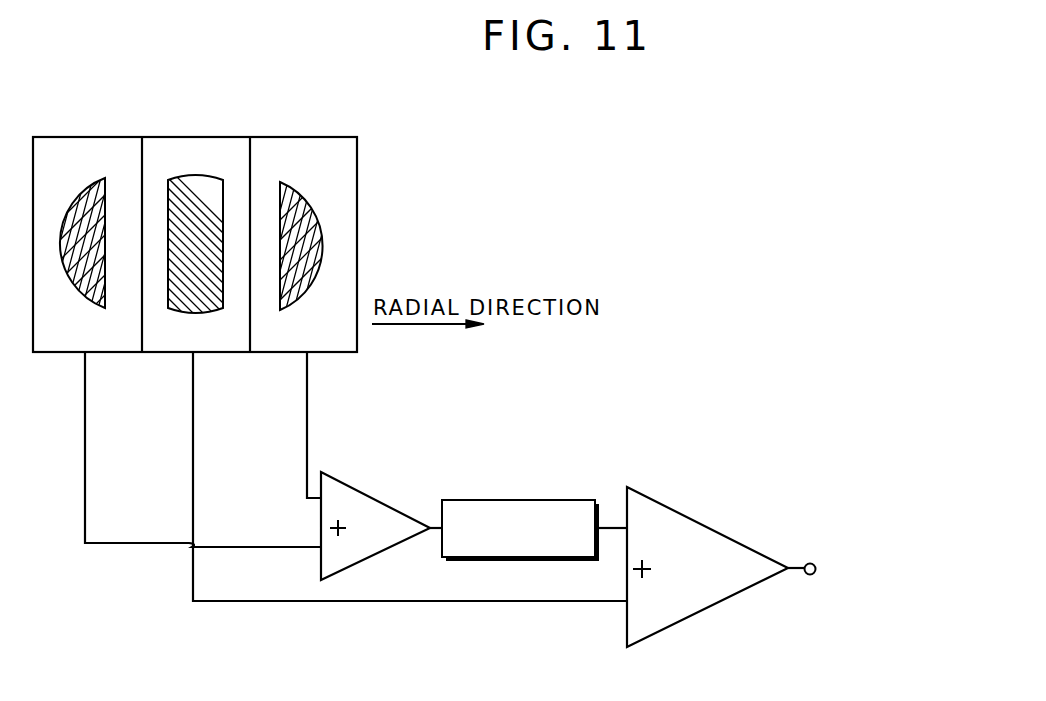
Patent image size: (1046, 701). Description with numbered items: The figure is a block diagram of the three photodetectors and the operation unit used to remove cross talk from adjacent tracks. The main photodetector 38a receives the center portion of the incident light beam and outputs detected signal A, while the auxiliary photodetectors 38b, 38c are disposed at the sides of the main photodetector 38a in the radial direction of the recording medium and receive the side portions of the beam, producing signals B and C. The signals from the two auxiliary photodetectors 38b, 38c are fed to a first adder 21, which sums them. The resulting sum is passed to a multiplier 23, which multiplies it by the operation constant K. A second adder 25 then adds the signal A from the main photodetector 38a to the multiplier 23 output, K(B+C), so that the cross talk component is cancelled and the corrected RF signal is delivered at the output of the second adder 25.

The auxiliary photodetector 38b is at (102, 135).
The main photodetector 38a is at (203, 137).
The auxiliary photodetector 38c is at (316, 137).
The first adder 21 is at (367, 492).
The multiplier 23 is at (527, 500).
The second adder 25 is at (682, 512).